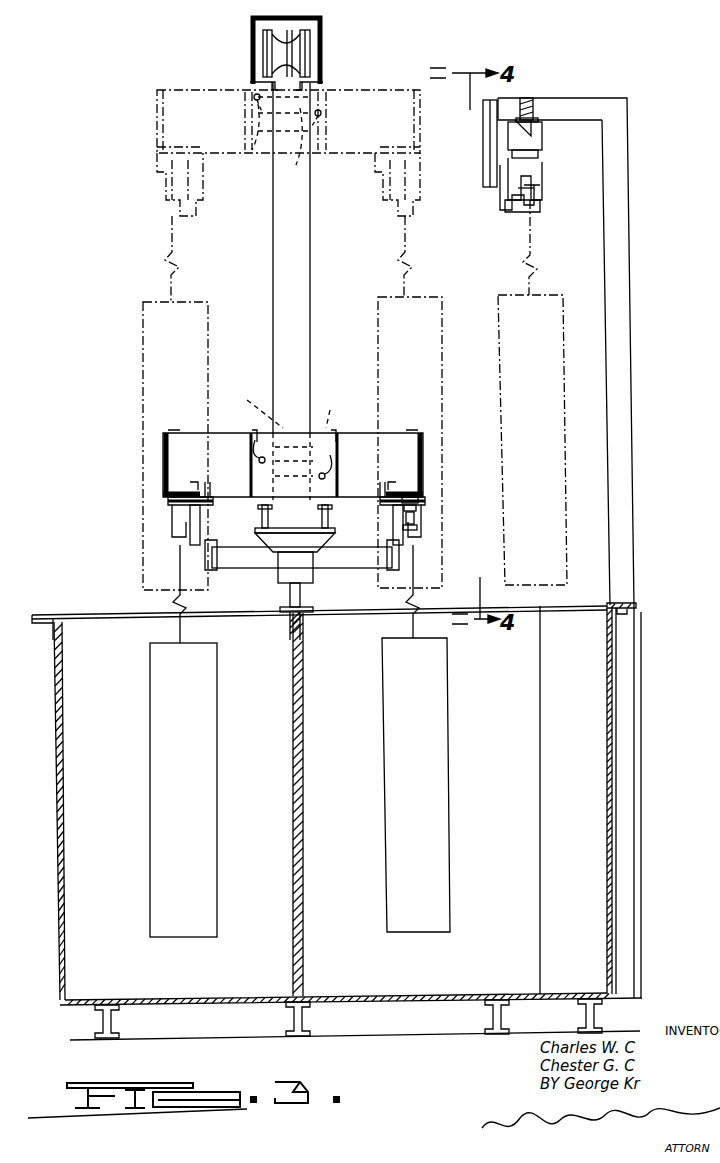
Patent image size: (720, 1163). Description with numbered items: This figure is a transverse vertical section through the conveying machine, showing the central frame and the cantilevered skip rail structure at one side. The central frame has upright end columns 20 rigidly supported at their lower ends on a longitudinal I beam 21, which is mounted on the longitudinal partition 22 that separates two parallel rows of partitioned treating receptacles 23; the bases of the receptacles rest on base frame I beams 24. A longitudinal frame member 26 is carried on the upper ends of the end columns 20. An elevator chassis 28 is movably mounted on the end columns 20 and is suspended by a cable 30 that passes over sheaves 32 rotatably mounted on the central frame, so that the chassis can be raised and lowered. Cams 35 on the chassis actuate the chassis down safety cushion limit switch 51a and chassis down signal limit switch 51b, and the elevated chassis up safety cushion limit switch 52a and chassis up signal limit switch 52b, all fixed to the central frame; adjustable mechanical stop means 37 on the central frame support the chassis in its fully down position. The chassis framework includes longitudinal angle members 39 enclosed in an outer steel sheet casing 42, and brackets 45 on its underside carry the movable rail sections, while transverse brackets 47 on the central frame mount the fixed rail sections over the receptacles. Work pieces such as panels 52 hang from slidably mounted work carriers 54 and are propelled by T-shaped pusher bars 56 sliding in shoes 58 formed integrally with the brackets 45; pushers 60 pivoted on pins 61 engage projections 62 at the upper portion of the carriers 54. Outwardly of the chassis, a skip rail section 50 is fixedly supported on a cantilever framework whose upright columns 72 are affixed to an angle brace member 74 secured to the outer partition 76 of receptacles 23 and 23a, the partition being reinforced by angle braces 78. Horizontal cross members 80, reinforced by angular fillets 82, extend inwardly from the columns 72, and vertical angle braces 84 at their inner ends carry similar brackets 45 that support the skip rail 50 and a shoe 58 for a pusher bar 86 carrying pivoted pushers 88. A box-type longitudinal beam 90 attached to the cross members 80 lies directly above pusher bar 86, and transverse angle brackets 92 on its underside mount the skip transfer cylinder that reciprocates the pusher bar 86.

The upright end columns 20 is at (296, 246).
The longitudinal I beam 21 is at (302, 595).
The longitudinal partition 22 is at (290, 796).
The treating receptacles 23 is at (60, 930).
The treating receptacle 23a is at (385, 986).
The I beams 24 is at (290, 1015).
The longitudinal frame member 26 is at (324, 68).
The elevator chassis 28 is at (155, 128).
The cable 30 is at (292, 32).
The sheaves 32 is at (306, 50).
The cams 35 is at (254, 100).
The adjustable mechanical stop means 37 is at (268, 506).
The longitudinal angle members 39 is at (222, 494).
The outer steel sheet casing 42 is at (170, 116).
The brackets 45 is at (508, 209).
The transverse brackets 47 is at (265, 563).
The skip rail section 50 is at (535, 222).
The hose 51a is at (232, 383).
The hose 51b is at (332, 393).
The panels 52 is at (142, 350).
The hose 52a is at (328, 172).
The hose 52b is at (230, 172).
The work carriers 54 is at (540, 206).
The pusher bars 56 is at (418, 510).
The shoes 58 is at (540, 152).
The pushers 60 is at (418, 529).
The pivot pins 61 is at (416, 521).
The projections 62 is at (536, 190).
The upright columns 72 is at (626, 523).
The angle brace member 74 is at (628, 613).
The outer partition 76 is at (616, 711).
The angle braces 78 is at (637, 790).
The horizontal cross members 80 is at (590, 100).
The angular fillets 82 is at (540, 126).
The vertical angle braces 84 is at (483, 133).
The pusher bar 86 is at (542, 158).
The pushers 88 is at (542, 178).
The longitudinal beam 90 is at (533, 104).
The transverse angle brackets 92 is at (538, 119).